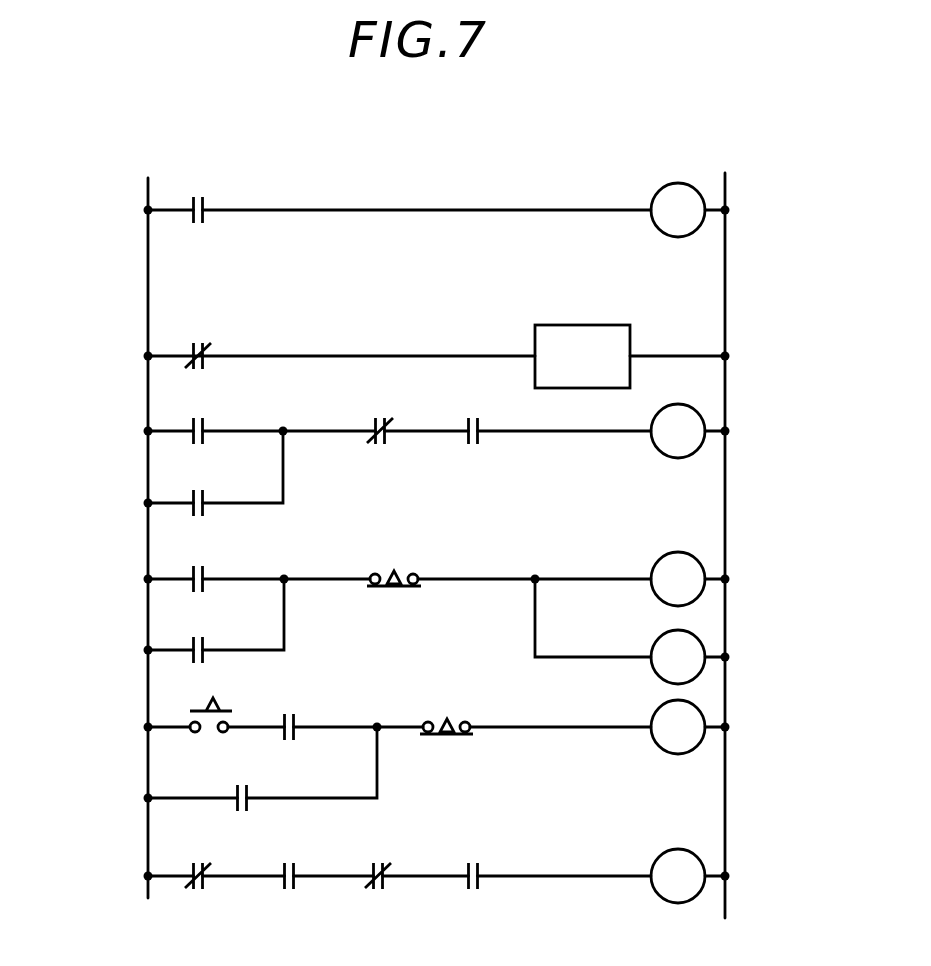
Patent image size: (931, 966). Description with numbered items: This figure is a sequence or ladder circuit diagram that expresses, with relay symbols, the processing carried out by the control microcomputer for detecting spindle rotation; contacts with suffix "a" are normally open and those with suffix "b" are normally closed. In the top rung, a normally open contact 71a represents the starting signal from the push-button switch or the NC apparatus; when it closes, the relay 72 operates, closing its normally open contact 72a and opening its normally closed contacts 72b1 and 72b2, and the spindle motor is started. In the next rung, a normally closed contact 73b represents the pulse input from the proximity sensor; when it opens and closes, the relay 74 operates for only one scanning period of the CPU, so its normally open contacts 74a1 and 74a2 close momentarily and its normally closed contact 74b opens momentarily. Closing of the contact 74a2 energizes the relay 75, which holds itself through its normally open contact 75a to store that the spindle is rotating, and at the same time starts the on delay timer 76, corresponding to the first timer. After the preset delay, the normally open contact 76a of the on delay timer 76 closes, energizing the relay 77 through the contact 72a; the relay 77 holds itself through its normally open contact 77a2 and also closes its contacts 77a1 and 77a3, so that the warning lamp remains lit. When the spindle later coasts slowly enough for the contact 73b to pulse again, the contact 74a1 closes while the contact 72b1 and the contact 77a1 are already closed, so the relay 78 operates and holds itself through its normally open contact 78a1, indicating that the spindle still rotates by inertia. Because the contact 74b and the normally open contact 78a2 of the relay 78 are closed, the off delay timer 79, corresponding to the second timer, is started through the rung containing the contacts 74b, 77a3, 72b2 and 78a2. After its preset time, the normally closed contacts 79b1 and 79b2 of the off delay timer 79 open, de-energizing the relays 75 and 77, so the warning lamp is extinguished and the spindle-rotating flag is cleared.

The normally open contact 71a is at (205, 198).
The relay 72 is at (660, 205).
The normally closed contact 73b is at (205, 350).
The relay 74 is at (546, 325).
The normally open contact 74a1 is at (205, 420).
The normally closed contact 72b1 is at (387, 436).
The normally open contact 77a1 is at (480, 437).
The relay 78 is at (700, 412).
The normally open contact 78a1 is at (205, 490).
The normally open contact 74a2 is at (205, 568).
The normally closed contact 79b1 is at (398, 588).
The relay 75 is at (700, 560).
The normally open contact 75a is at (205, 648).
The on delay timer 76 is at (700, 637).
The normally open contact 76a is at (198, 708).
The normally open contact 72a is at (296, 720).
The normally closed contact 79b2 is at (455, 738).
The relay 77 is at (700, 708).
The normally open contact 77a2 is at (249, 795).
The off delay timer 79 is at (700, 858).
The normally closed contact 74b is at (205, 880).
The normally open contact 77a3 is at (296, 880).
The normally closed contact 72b2 is at (385, 880).
The normally open contact 78a2 is at (480, 880).